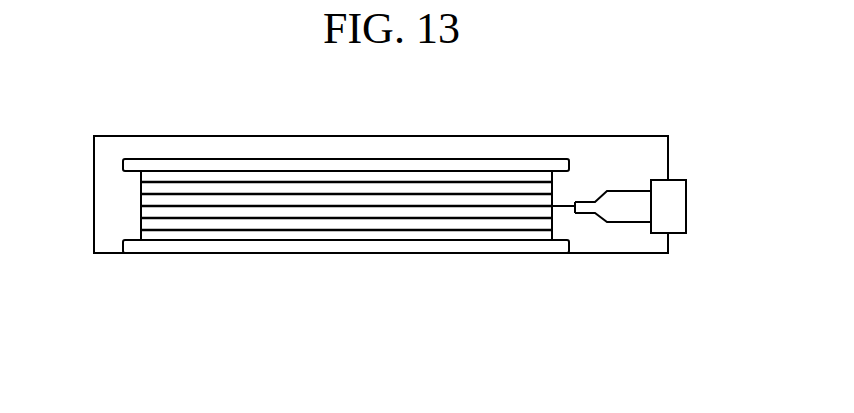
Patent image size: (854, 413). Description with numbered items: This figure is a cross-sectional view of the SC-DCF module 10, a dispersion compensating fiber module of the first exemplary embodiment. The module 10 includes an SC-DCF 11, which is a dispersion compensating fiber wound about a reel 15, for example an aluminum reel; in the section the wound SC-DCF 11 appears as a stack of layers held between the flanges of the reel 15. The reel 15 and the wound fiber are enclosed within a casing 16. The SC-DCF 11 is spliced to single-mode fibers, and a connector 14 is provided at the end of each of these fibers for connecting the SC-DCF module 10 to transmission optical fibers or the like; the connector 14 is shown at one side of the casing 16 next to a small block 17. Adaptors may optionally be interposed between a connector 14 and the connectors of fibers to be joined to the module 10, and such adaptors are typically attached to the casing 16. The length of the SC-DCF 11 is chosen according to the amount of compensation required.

The SC-DCF module 10 is at (427, 217).
The SC-DCF 11 is at (177, 230).
The connector 14 is at (630, 192).
The reel 15 is at (136, 127).
The casing 16 is at (358, 262).
The terminal box 17 is at (686, 205).